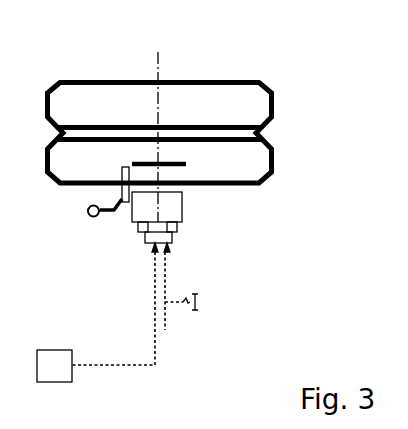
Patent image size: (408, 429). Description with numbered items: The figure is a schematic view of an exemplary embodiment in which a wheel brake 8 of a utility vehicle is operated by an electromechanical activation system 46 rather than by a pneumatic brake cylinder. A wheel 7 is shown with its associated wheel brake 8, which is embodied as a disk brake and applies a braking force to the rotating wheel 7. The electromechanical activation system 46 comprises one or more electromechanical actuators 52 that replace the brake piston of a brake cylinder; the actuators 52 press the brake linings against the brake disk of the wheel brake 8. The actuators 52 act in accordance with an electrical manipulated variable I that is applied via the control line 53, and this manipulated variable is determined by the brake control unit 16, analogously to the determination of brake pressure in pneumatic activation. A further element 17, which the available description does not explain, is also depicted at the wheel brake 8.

The wheel 7 is at (250, 167).
The wheel brake 8 is at (156, 253).
The brake control unit 16 is at (54, 366).
The actuating lever / bracket 17 is at (125, 166).
The electromechanical activation system 46 is at (182, 212).
The electromechanical actuator 52 is at (178, 233).
The control line 53 is at (157, 347).